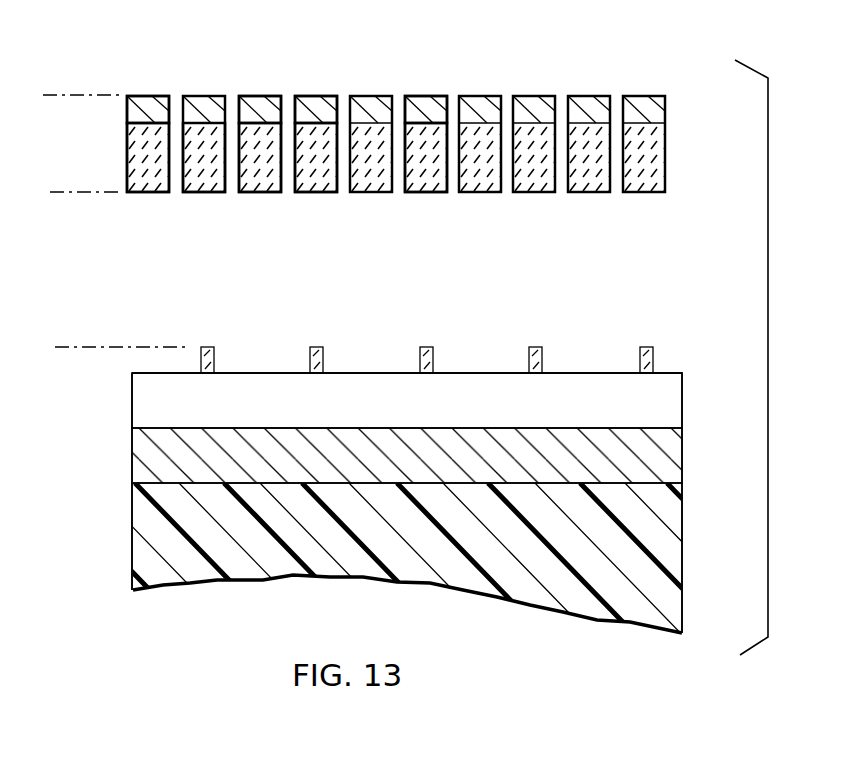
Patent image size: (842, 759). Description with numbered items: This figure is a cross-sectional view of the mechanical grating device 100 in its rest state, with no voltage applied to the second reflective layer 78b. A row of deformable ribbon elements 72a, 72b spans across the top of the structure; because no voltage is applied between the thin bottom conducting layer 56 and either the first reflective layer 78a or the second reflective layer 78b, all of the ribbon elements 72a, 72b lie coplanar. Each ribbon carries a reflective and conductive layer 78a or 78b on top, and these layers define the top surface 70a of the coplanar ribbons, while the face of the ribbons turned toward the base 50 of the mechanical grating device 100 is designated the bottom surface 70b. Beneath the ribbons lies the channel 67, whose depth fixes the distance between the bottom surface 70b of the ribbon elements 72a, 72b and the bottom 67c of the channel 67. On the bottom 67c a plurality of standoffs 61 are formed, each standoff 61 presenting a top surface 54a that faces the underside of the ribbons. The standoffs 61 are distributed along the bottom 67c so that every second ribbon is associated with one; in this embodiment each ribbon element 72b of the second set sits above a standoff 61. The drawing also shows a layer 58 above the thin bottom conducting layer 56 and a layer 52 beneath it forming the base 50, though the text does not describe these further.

The mechanical grating device 100 is at (563, 70).
The top surface 70a is at (63, 95).
The bottom surface 70b is at (67, 192).
The first reflective layer 78a is at (142, 103).
The second reflective layer 78b is at (320, 102).
The deformable ribbon element 72a is at (150, 182).
The deformable ribbon element 72b is at (203, 182).
The channel 67 is at (593, 267).
The bottom of the channel 67c is at (238, 372).
The standoff 61 is at (543, 353).
The top surface of the standoff 54a is at (98, 348).
The top layer 58 is at (670, 397).
The thin bottom conducting layer 56 is at (673, 452).
The base layer 52 is at (668, 533).
The base 50 is at (114, 516).